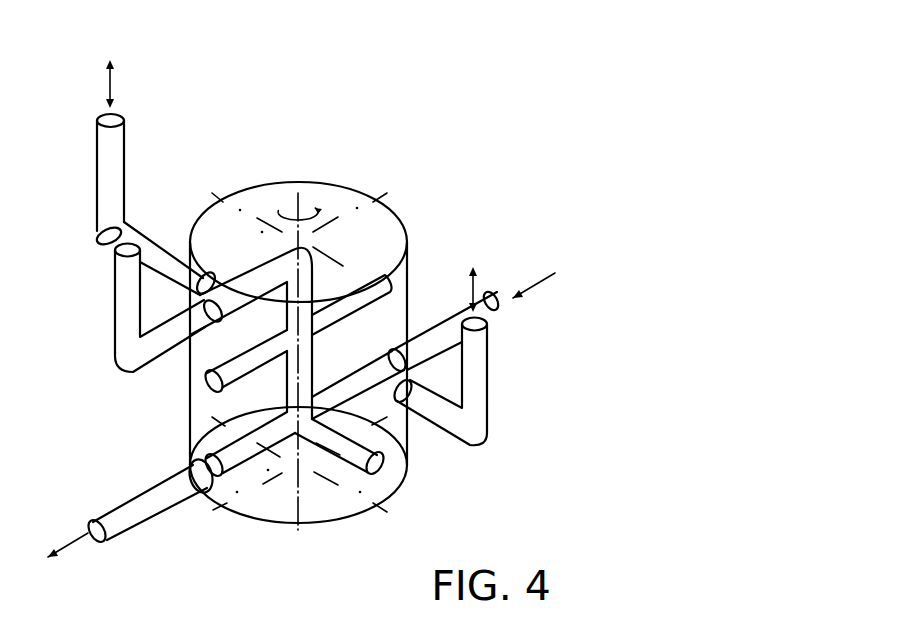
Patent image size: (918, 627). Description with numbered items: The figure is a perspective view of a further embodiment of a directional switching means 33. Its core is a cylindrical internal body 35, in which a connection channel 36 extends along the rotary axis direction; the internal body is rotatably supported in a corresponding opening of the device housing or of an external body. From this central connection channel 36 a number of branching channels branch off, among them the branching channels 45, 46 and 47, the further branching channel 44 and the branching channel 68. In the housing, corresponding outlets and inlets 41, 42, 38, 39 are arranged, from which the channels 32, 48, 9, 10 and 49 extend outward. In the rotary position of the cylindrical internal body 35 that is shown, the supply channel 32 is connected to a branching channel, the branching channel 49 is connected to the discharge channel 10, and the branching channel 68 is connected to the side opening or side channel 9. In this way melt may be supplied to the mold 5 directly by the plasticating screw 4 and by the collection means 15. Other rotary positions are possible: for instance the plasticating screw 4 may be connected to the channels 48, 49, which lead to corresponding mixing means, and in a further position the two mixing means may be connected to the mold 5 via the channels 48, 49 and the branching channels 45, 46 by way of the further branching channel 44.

The plasticating screw 4 is at (542, 275).
The mold 5 is at (58, 556).
The side channel 9 is at (440, 332).
The discharge channel 10 is at (142, 509).
The collection means 15 is at (115, 242).
The supply channel 32 is at (120, 293).
The directional switching means 33 is at (428, 188).
The cylindrical internal body 35 is at (343, 221).
The connection channel 36 is at (290, 382).
The outlet or inlet 38 is at (200, 291).
The outlet or inlet 39 is at (205, 318).
The outlet or inlet 41 is at (203, 500).
The outlet or inlet 42 is at (392, 355).
The further branching channel 44 is at (317, 458).
The branching channel 45 is at (207, 384).
The branching channel 46 is at (355, 303).
The branching channel 47 is at (247, 283).
The channel 48 is at (108, 172).
The branching channel 49 is at (478, 365).
The branching channel 68 is at (353, 375).